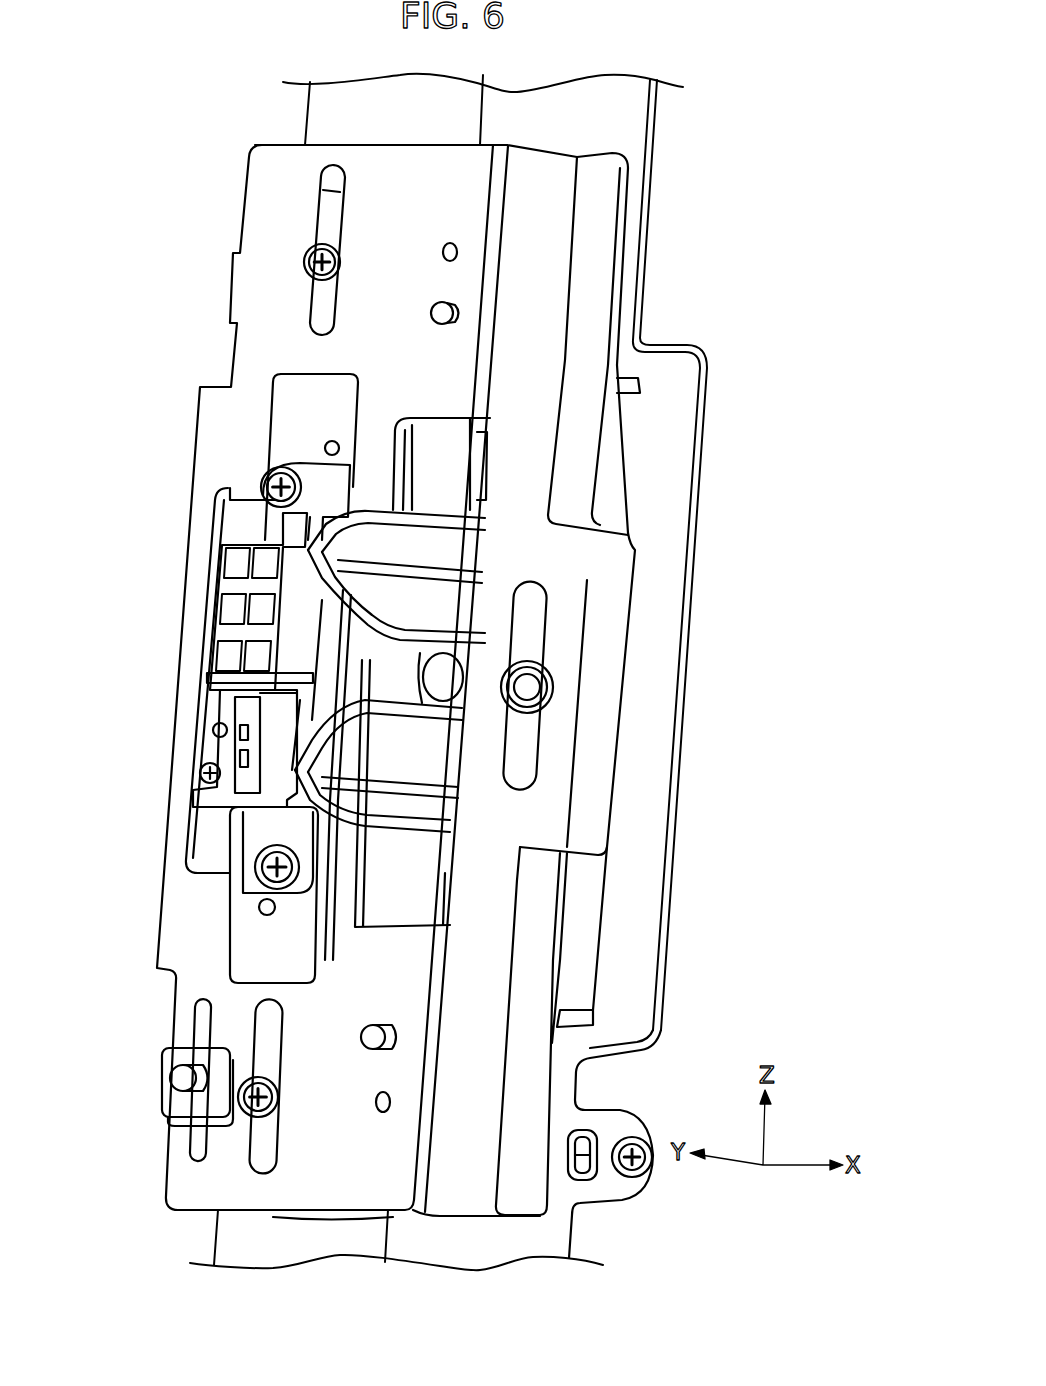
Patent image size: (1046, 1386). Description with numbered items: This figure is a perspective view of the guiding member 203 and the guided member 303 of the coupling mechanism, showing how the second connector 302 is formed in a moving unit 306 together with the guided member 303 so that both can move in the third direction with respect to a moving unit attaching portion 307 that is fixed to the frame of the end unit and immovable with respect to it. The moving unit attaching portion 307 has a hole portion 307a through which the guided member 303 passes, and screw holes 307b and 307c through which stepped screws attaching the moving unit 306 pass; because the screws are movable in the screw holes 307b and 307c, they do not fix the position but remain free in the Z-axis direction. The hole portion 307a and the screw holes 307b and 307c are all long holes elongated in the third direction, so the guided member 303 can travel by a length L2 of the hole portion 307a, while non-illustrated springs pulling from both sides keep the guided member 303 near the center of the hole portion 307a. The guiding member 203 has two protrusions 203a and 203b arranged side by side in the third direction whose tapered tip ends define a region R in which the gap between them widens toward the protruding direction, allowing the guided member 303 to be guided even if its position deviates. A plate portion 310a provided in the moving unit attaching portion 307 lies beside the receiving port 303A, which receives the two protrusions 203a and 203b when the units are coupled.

The moving unit attaching portion 307 is at (475, 1160).
The hole portion 307a is at (530, 745).
The screw hole 307b is at (330, 210).
The screw hole 307c is at (265, 1136).
The plate portion 310a is at (603, 585).
The moving unit 306 is at (305, 402).
The guided member 303 is at (243, 807).
The receiving port 303A is at (442, 463).
The second connector 302 is at (292, 592).
The guiding member 203 is at (273, 612).
The protrusion 203a is at (438, 528).
The protrusion 203b is at (450, 683).
The region R is at (318, 593).
The length of the hole portion L2 is at (727, 625).